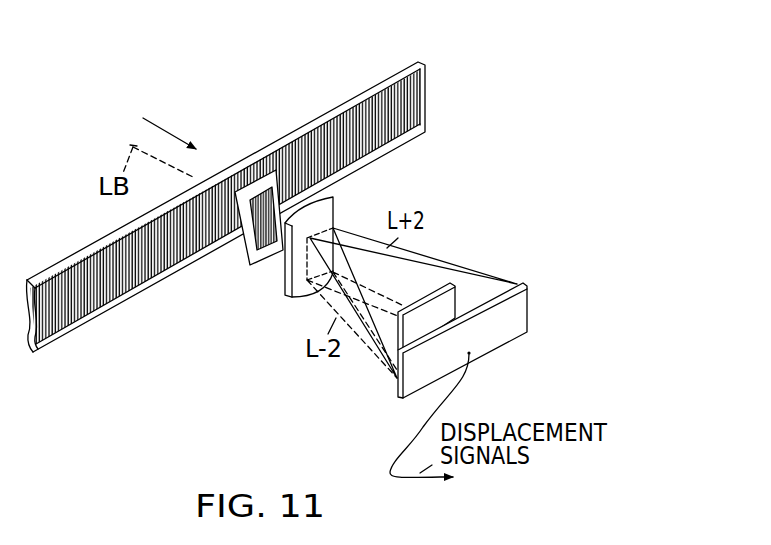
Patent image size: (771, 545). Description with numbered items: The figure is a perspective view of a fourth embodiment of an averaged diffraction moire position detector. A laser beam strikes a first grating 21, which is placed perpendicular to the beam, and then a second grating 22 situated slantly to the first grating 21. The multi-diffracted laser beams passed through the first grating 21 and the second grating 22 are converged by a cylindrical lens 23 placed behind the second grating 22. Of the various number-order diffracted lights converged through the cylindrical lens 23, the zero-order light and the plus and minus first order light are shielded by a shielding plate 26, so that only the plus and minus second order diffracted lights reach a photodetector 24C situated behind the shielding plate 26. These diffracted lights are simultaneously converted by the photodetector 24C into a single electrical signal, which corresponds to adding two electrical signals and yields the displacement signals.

The first grating 21 is at (446, 64).
The second grating 22 is at (246, 266).
The cylindrical lens 23 is at (336, 196).
The shielding plate 26 is at (448, 279).
The photodetector 24C is at (527, 287).